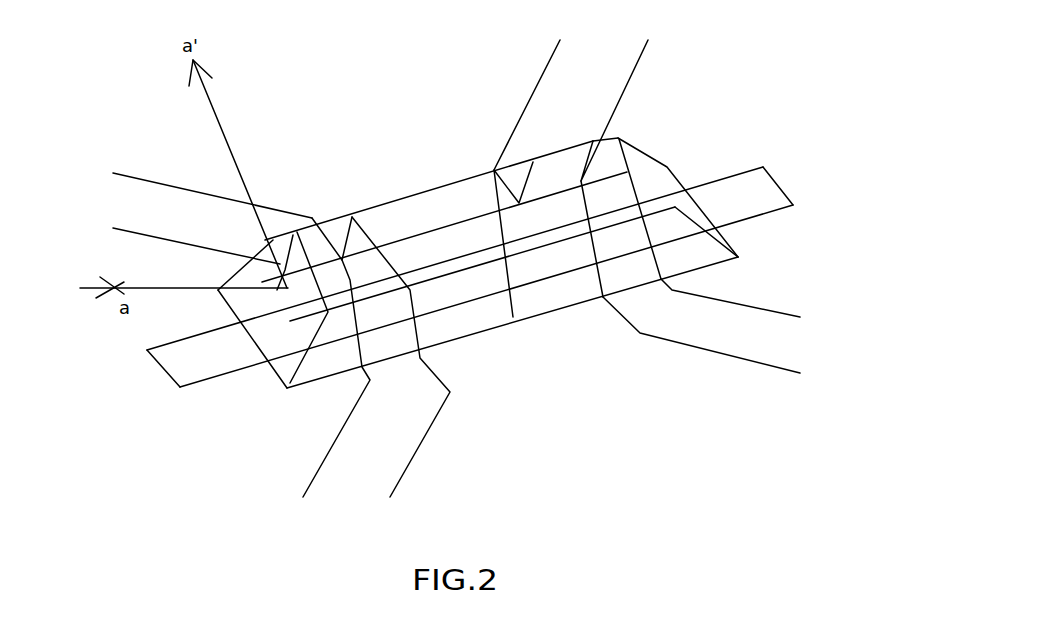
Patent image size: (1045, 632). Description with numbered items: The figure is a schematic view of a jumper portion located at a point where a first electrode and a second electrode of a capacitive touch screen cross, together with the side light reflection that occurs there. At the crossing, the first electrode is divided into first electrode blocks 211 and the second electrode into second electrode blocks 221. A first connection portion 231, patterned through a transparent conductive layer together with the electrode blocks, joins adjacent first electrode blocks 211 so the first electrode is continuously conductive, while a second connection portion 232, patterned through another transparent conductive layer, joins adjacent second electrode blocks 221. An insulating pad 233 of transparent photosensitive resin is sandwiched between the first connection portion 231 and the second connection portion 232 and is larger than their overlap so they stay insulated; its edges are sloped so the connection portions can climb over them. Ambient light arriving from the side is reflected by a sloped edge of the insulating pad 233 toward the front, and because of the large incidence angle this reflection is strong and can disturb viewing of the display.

The first connection portion 231 is at (465, 220).
The second connection portion 232 is at (233, 368).
The insulating pad 233 is at (513, 317).
The first electrode blocks 211 is at (439, 417).
The second electrode blocks 221 is at (350, 414).